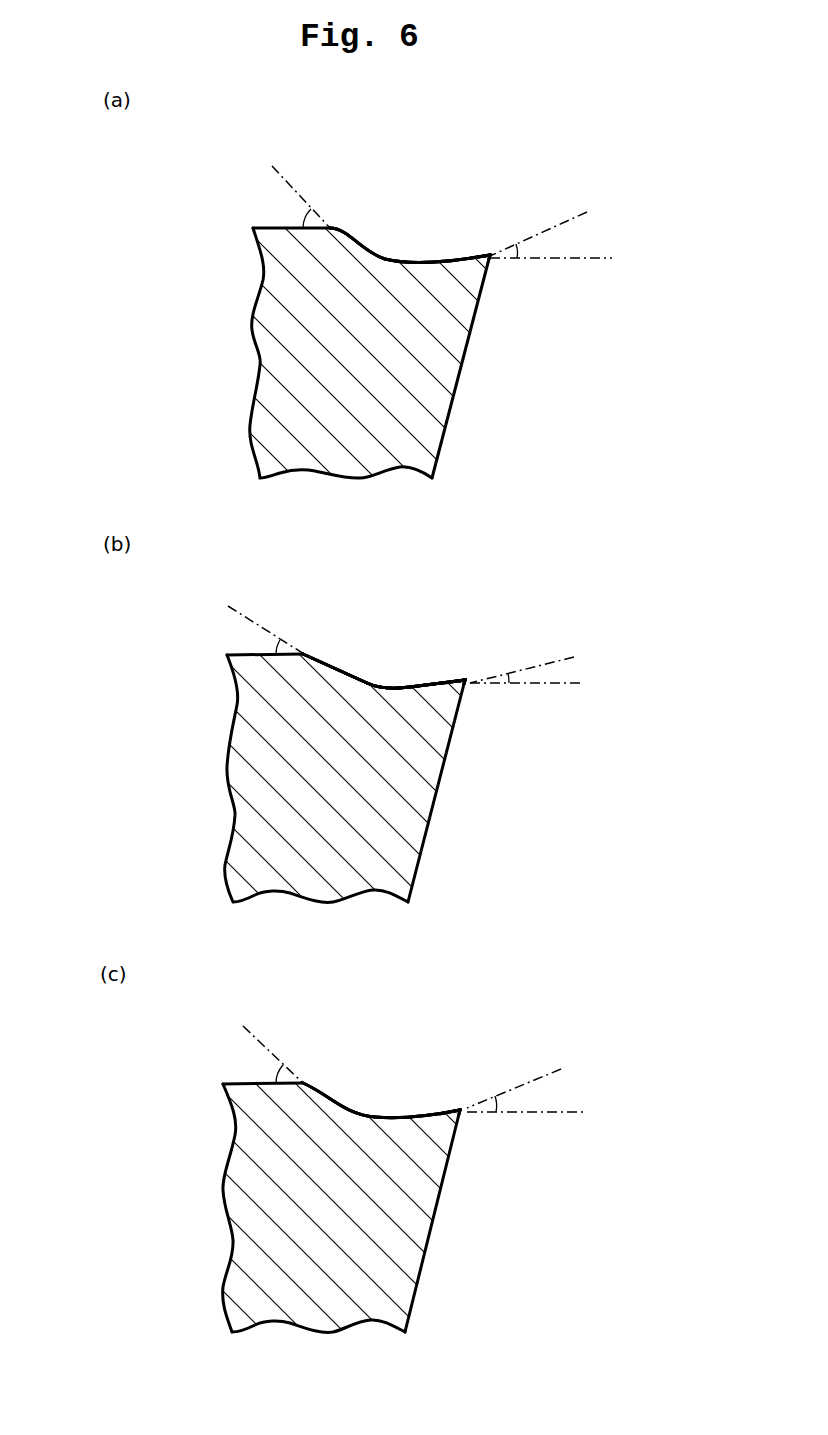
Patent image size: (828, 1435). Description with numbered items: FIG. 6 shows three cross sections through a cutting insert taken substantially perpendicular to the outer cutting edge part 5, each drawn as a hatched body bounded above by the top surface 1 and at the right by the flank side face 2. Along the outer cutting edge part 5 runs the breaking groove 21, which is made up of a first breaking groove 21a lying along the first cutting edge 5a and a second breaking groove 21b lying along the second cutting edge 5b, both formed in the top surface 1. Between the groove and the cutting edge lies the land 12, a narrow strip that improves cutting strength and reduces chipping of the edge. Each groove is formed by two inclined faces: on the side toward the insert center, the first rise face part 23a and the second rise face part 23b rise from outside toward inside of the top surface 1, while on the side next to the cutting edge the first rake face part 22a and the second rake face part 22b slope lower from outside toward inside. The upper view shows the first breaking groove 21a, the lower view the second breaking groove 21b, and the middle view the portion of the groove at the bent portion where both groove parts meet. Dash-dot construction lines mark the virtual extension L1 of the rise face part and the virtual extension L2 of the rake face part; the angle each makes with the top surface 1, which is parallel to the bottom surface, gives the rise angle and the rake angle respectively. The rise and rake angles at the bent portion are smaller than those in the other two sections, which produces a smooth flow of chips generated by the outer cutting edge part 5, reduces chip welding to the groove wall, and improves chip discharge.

The top surface 1 is at (262, 228).
The flank face 2 is at (457, 385).
The outer cutting edge part 5 is at (492, 257).
The first cutting edge 5a is at (474, 469).
The second cutting edge 5b is at (459, 897).
The land 12 is at (488, 253).
The breaking groove 21 is at (448, 604).
The first breaking groove 21a is at (473, 200).
The second breaking groove 21b is at (442, 1059).
The first rake face part 22a is at (460, 258).
The second rake face part 22b is at (436, 681).
The first rise face part 23a is at (347, 238).
The second rise face part 23b is at (328, 664).
The virtual extension of the rise face part L1 is at (272, 168).
The virtual extension of the rake face part L2 is at (572, 213).